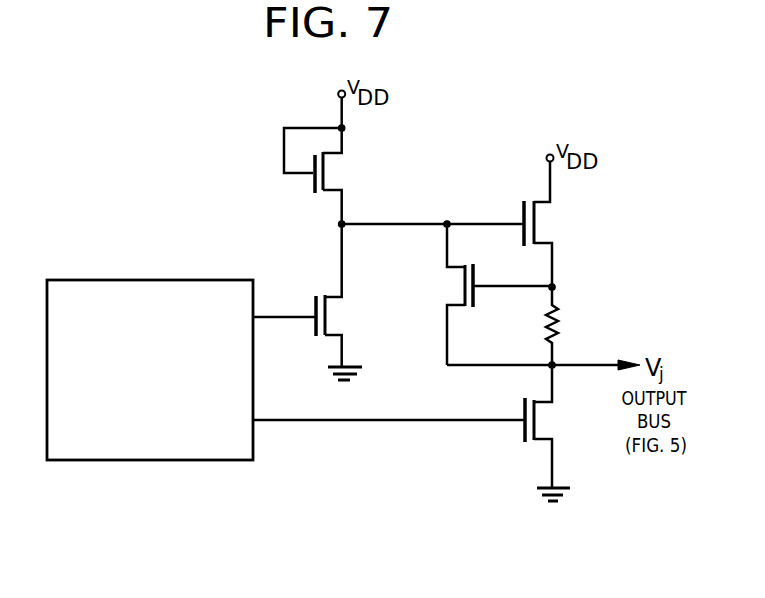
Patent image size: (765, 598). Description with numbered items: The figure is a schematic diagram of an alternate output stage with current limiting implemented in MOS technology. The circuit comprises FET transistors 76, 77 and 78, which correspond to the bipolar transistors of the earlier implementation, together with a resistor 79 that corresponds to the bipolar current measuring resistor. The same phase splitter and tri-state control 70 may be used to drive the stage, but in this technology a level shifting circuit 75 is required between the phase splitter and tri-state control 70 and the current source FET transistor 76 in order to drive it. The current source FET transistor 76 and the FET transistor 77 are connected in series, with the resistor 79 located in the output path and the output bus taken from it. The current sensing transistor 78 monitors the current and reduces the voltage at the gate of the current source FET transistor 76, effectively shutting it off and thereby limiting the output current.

The phase splitter and tri-state control 70 is at (120, 280).
The level shifting circuit 75 is at (298, 210).
The current source FET transistor 76 is at (552, 203).
The FET transistor 77 is at (552, 400).
The current sensing transistor 78 is at (447, 267).
The resistor 79 is at (560, 313).